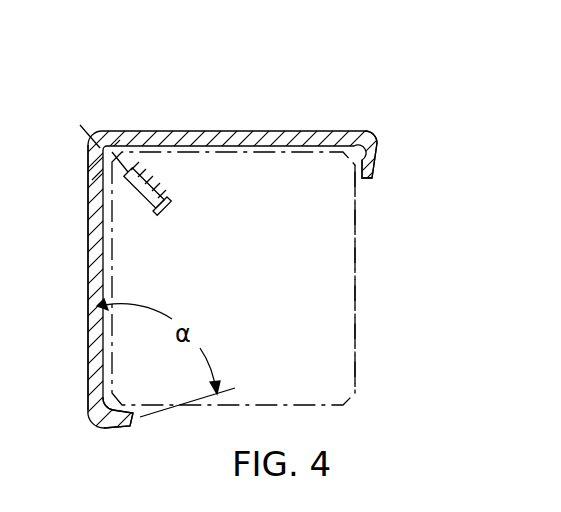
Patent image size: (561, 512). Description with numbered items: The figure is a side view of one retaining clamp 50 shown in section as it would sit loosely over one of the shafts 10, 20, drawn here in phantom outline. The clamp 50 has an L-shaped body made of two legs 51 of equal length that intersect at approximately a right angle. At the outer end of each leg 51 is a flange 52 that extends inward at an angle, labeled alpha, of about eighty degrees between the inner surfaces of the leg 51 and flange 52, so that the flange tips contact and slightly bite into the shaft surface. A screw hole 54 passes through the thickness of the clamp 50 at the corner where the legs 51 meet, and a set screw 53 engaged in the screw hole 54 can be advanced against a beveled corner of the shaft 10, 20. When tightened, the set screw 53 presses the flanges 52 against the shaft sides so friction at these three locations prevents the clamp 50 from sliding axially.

The retaining clamp 50 is at (172, 88).
The leg 51 is at (260, 131).
The flange 52 is at (378, 158).
The set screw 53 is at (137, 195).
The screw hole 54 is at (103, 137).
The shaft 10 is at (357, 300).
The shaft 20 is at (356, 300).